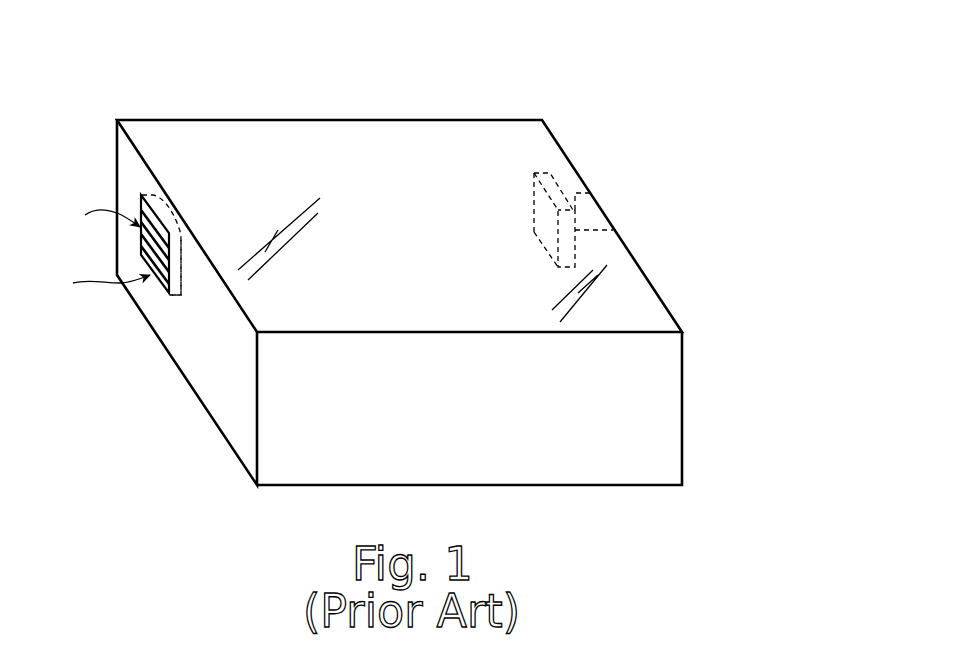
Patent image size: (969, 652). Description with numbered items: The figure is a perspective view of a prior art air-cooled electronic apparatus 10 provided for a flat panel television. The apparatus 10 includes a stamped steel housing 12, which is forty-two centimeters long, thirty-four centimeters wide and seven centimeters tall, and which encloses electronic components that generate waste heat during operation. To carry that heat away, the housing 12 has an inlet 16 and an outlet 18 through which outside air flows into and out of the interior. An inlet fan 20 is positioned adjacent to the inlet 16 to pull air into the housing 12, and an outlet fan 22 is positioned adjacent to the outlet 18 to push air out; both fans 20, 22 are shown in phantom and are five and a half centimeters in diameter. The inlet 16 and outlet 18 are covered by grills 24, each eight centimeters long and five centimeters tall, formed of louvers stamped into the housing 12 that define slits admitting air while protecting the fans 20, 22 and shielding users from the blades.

The air-cooled electronic apparatus 10 is at (656, 85).
The housing 12 is at (703, 422).
The inlet 16 is at (155, 292).
The outlet 18 is at (578, 218).
The inlet fan 20 is at (177, 306).
The outlet fan 22 is at (528, 240).
The grills 24 is at (133, 190).